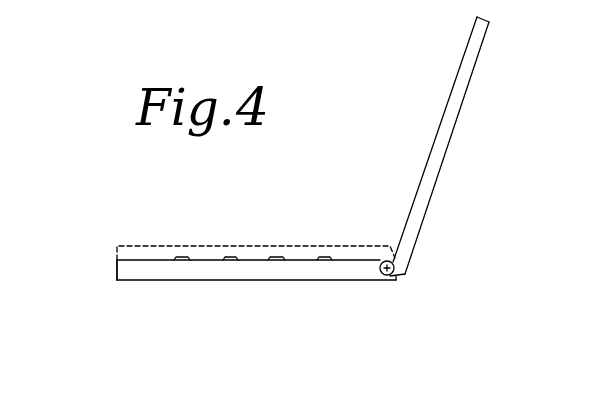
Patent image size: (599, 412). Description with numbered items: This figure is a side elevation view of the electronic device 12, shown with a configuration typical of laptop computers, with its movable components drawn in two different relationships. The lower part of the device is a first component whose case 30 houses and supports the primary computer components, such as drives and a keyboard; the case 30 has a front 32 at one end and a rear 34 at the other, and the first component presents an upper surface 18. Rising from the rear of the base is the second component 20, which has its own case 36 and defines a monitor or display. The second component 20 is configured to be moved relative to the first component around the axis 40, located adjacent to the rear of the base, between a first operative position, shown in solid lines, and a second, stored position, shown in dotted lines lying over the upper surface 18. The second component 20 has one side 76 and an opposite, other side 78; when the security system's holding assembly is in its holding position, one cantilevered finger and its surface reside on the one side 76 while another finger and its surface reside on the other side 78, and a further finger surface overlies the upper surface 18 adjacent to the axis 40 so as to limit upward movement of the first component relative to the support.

The electronic device 12 is at (370, 109).
The case 36 is at (420, 146).
The other side 78 is at (422, 180).
The one side 76 is at (434, 193).
The second component 20 is at (140, 255).
The upper surface 18 is at (362, 260).
The case 30 is at (200, 272).
The rear 34 is at (397, 280).
The front 32 is at (118, 275).
The axis 40 is at (393, 266).